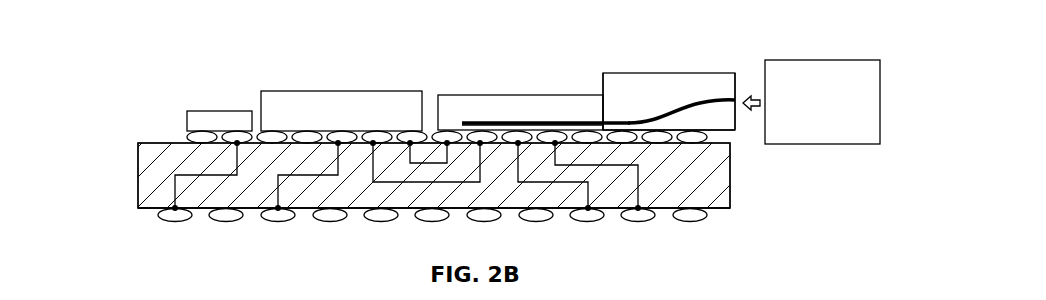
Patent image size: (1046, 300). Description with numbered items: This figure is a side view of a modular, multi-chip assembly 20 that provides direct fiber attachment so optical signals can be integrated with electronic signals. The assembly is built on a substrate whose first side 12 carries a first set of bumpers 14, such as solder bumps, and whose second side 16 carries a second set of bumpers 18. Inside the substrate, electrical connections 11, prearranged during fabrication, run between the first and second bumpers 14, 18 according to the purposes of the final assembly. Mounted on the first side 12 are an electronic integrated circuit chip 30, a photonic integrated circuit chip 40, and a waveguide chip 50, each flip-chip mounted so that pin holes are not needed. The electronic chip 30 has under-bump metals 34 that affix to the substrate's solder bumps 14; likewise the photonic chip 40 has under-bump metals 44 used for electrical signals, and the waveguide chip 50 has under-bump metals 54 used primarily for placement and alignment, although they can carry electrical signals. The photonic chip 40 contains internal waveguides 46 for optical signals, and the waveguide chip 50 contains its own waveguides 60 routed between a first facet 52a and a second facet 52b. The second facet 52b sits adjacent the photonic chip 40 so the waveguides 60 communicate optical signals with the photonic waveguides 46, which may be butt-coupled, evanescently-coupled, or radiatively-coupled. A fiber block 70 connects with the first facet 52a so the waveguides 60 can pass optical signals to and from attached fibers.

The electrical connections 11 is at (173, 202).
The first side 12 is at (160, 142).
The first set of bumpers 14 is at (201, 131).
The second side 16 is at (145, 210).
The second set of bumpers 18 is at (177, 221).
The multi-chip assembly 20 is at (120, 111).
The electronic integrated circuit chip 30 is at (298, 95).
The under-bump metals 34 is at (320, 130).
The photonic integrated circuit chip 40 is at (512, 95).
The under-bump metals 44 is at (478, 124).
The internal waveguides 46 is at (517, 124).
The waveguide chip 50 is at (682, 104).
The first facet 52a is at (735, 131).
The second facet 52b is at (602, 92).
The under-bump metals 54 is at (640, 130).
The internal waveguides 60 is at (720, 100).
The fiber block 70 is at (823, 60).